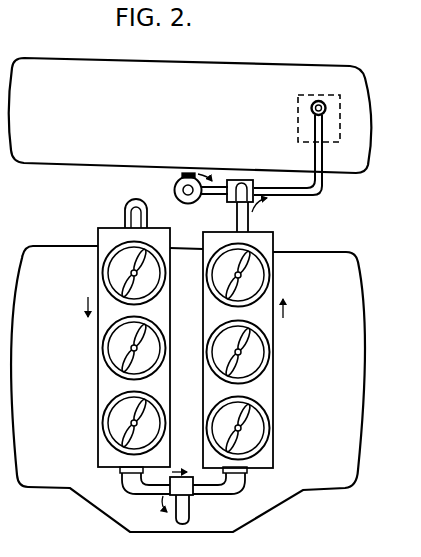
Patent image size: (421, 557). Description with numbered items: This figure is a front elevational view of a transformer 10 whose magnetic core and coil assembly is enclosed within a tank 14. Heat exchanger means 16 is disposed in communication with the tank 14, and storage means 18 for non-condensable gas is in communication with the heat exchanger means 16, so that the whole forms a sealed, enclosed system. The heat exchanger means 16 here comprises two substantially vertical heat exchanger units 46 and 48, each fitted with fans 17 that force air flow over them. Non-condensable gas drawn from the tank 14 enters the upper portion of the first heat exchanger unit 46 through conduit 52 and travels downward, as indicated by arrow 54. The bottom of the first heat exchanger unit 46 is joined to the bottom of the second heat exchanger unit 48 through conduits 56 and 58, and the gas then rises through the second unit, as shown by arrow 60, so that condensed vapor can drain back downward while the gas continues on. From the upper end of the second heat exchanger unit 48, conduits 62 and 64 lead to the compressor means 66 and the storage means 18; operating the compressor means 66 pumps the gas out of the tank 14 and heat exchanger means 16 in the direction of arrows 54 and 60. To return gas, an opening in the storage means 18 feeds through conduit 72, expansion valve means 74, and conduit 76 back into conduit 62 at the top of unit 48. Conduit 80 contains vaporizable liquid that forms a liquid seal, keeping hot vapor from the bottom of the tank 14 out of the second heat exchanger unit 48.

The transformer 10 is at (388, 278).
The tank 14 is at (354, 481).
The heat exchanger means 16 is at (194, 386).
The fans 17 is at (236, 345).
The storage means 18 is at (81, 58).
The first heat exchanger unit 46 is at (98, 440).
The second heat exchanger unit 48 is at (273, 445).
The conduit 52 is at (125, 214).
The arrow 54 is at (88, 300).
The conduit 56 is at (144, 490).
The conduit 58 is at (233, 490).
The arrow 60 is at (284, 310).
The conduit 62 is at (248, 222).
The conduit 64 is at (325, 188).
The compressor means 66 is at (298, 121).
The conduit 72 is at (183, 176).
The expansion valve means 74 is at (178, 199).
The conduit 76 is at (229, 189).
The conduit 80 is at (192, 509).